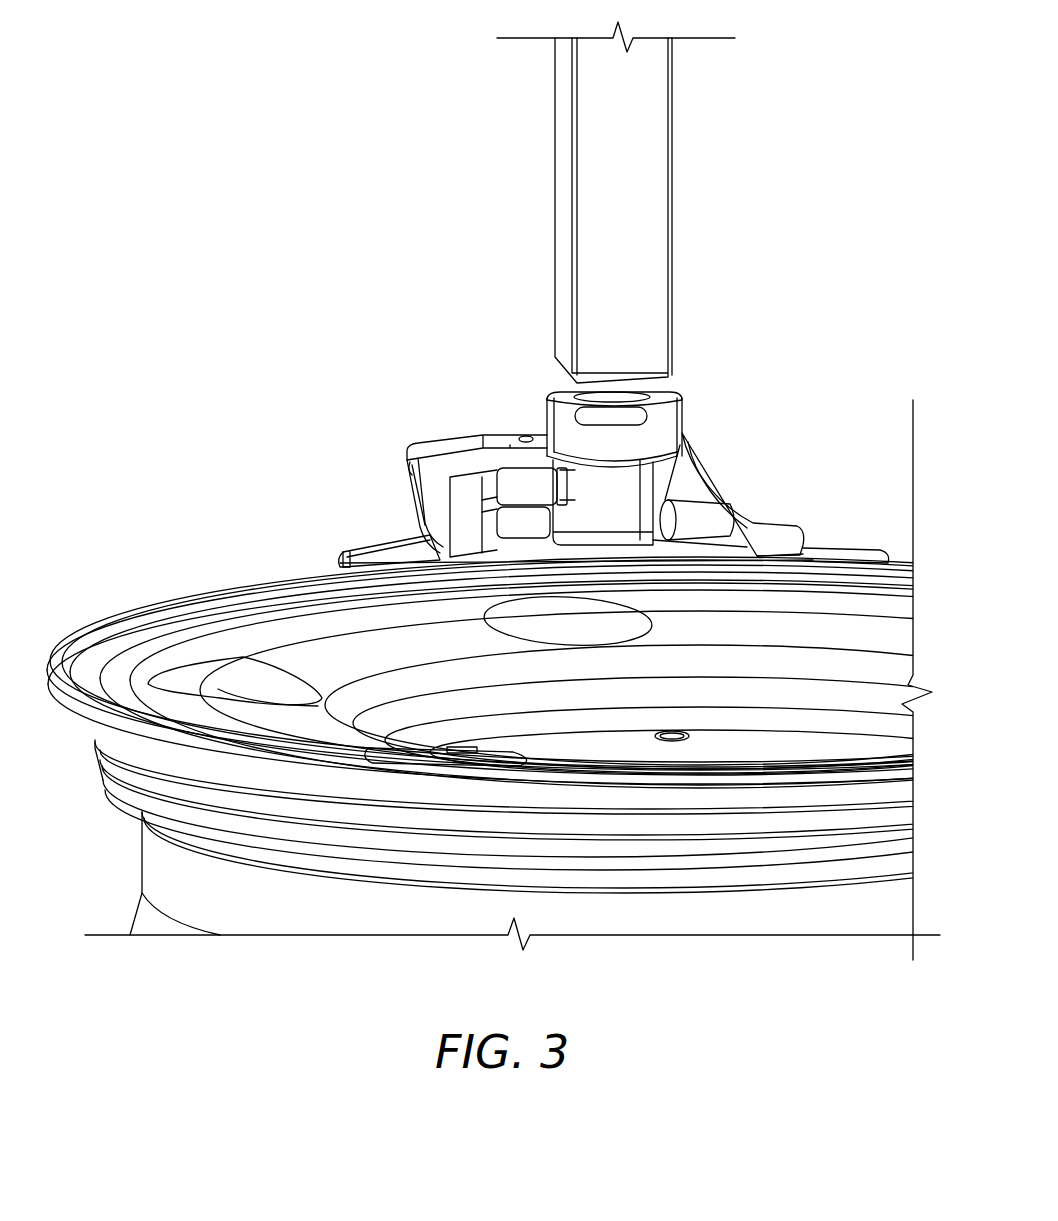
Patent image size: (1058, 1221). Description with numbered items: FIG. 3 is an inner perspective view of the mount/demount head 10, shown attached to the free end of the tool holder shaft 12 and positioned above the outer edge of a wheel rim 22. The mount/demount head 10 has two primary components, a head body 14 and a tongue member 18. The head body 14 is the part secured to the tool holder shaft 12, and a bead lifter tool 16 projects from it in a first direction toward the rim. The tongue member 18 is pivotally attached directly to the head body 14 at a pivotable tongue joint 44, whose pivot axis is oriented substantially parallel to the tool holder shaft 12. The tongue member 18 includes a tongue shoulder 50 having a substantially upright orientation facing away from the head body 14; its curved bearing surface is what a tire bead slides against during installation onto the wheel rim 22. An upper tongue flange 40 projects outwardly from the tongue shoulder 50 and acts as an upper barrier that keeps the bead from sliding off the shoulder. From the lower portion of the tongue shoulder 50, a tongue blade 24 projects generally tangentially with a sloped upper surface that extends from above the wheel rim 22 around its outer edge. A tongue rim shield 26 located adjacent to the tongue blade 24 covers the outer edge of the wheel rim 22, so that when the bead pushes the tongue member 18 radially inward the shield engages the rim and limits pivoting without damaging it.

The mount/demount head 10 is at (770, 465).
The tool holder shaft 12 is at (563, 267).
The head body 14 is at (697, 477).
The bead lifter tool 16 is at (833, 548).
The tongue member 18 is at (457, 438).
The wheel rim 22 is at (218, 606).
The tongue blade 24 is at (373, 540).
The tongue rim shield 26 is at (337, 563).
The upper tongue flange 40 is at (410, 460).
The pivotable tongue joint 44 is at (526, 424).
The tongue shoulder 50 is at (420, 500).